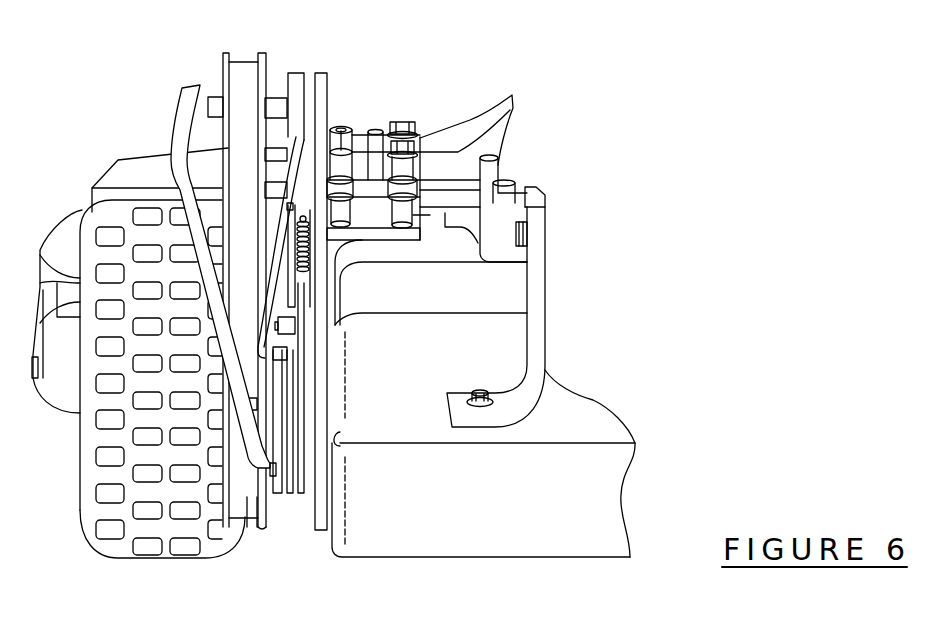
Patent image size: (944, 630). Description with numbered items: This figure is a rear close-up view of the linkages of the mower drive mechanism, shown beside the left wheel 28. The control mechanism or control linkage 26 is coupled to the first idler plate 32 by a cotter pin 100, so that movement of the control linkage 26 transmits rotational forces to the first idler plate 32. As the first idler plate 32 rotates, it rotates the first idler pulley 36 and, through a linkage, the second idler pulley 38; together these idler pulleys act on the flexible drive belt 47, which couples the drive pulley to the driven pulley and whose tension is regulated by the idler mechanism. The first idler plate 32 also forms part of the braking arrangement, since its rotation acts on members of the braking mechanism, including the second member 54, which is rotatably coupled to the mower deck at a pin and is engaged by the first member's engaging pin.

The control mechanism 26 is at (183, 133).
The left wheel 28 is at (105, 543).
The first idler arm or plate 32 is at (280, 493).
The first idler pulley 36 is at (245, 497).
The second idler pulley 38 is at (223, 77).
The flexible drive belt 47 is at (247, 113).
The second member 54 is at (290, 281).
The cotter pin 100 is at (300, 493).